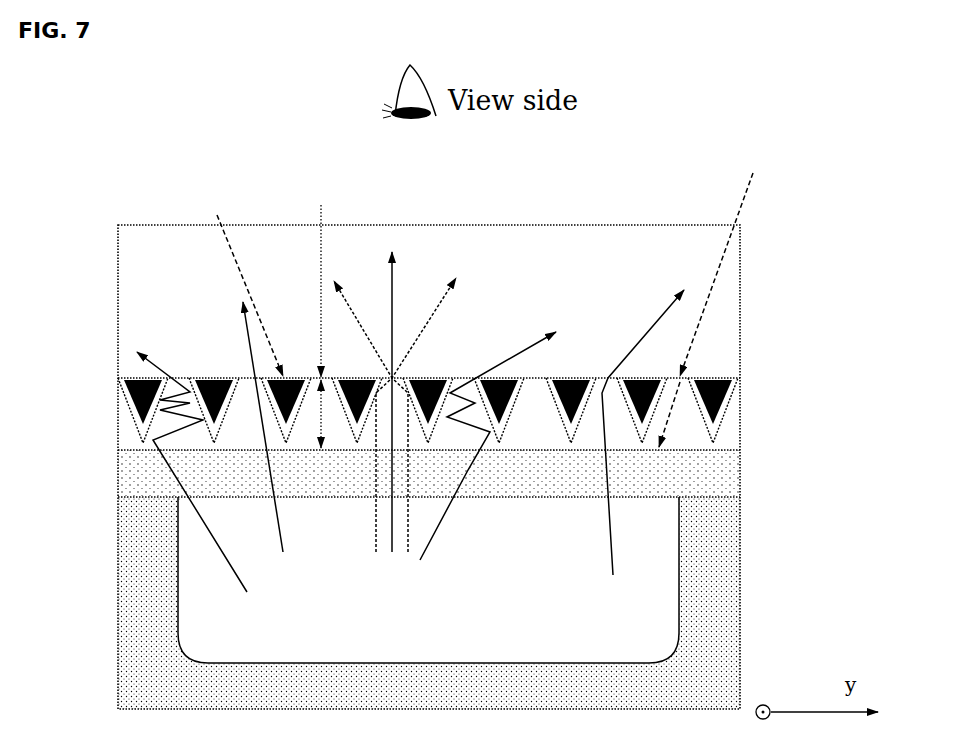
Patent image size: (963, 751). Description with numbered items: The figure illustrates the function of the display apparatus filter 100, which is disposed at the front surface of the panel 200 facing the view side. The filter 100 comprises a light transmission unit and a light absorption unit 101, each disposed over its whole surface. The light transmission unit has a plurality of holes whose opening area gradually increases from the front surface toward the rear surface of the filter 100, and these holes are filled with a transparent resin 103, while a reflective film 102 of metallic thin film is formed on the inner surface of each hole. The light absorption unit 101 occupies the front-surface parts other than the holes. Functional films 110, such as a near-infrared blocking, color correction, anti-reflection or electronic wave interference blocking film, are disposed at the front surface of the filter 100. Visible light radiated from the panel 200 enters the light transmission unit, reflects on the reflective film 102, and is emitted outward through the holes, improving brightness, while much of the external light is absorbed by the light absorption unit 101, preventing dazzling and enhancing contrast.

The display apparatus filter 100 is at (417, 437).
The light absorption unit 101 is at (125, 383).
The reflective film 102 is at (125, 411).
The transparent resin 103 is at (125, 440).
The functional films 110 is at (740, 292).
The panel 200 is at (752, 450).